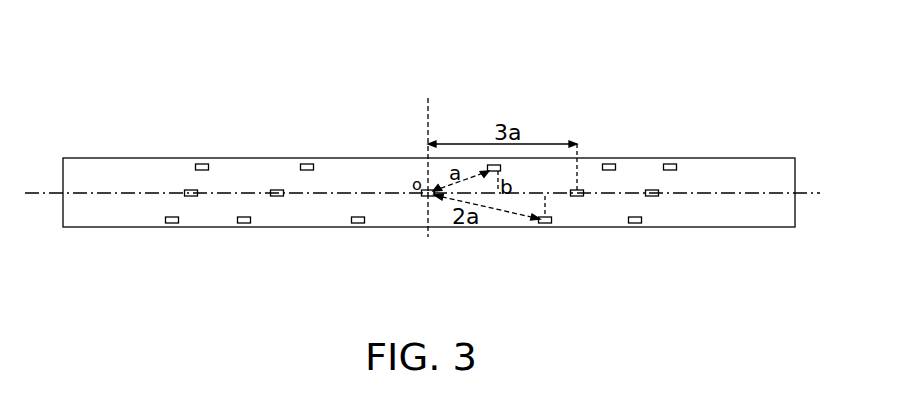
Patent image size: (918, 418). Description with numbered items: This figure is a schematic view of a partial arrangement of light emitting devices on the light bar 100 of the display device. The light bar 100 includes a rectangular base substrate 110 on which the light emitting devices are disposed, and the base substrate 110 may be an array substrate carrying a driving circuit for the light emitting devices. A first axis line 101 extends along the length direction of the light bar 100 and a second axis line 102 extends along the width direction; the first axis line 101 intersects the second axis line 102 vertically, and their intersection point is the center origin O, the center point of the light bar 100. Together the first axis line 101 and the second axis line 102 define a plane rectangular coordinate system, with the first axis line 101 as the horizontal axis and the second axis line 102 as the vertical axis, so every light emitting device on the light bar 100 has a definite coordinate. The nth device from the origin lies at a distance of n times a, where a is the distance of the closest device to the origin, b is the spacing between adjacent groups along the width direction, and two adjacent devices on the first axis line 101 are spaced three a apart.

The light bar 100 is at (318, 37).
The first axis line 101 is at (130, 190).
The second axis line 102 is at (426, 117).
The base substrate 110 is at (707, 213).